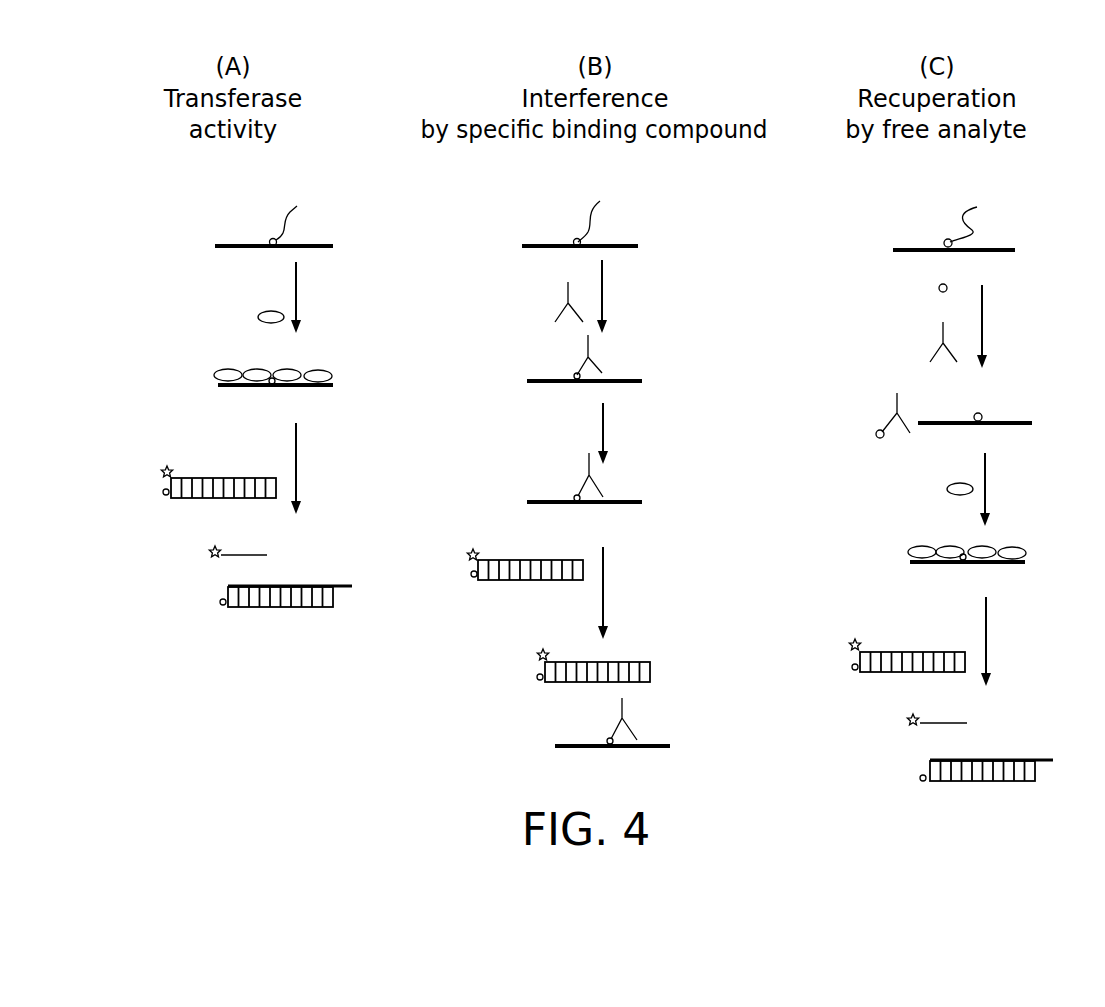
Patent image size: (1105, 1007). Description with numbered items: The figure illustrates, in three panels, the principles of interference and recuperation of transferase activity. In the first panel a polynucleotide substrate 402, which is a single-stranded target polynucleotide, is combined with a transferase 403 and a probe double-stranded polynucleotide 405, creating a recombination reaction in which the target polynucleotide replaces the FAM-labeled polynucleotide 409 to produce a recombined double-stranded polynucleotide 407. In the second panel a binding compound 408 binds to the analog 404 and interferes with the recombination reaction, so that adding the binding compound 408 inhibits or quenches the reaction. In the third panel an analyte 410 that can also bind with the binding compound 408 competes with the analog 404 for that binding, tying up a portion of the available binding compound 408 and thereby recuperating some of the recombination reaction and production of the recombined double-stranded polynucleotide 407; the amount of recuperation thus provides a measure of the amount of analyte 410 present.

The polynucleotide substrate 402 is at (212, 246).
The transferase 403 is at (320, 370).
The analog 404 is at (963, 560).
The probe double-stranded polynucleotide 405 is at (237, 478).
The recombined double-stranded polynucleotide 407 is at (343, 590).
The binding compound 408 is at (583, 362).
The FAM-labeled polynucleotide 409 is at (242, 557).
The analyte 410 is at (578, 502).